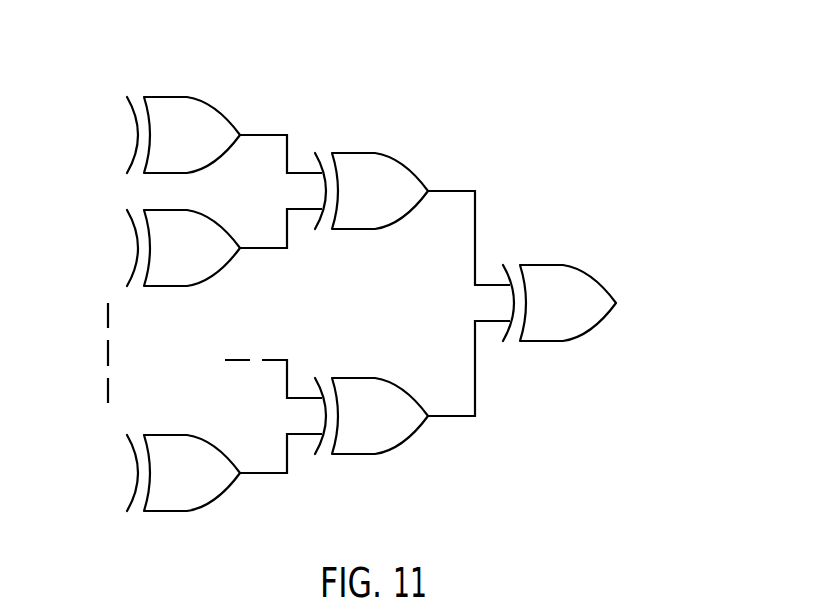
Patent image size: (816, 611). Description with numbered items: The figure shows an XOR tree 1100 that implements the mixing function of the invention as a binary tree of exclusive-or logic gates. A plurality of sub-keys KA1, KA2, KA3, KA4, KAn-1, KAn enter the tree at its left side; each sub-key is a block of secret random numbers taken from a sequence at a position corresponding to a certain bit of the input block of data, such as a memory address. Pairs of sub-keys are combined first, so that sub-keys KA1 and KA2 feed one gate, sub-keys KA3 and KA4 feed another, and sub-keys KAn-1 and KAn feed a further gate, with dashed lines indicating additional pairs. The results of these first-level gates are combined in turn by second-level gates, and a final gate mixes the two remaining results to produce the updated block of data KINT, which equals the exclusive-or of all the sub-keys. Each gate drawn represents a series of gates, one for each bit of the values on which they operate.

The XOR tree 1100 is at (372, 266).
The sub-key KA1 is at (134, 117).
The sub-key KA2 is at (134, 153).
The sub-key KA3 is at (134, 230).
The sub-key KA4 is at (134, 266).
The sub-key KAn-1 is at (134, 455).
The sub-key KAn is at (134, 491).
The updated block of data KINT is at (616, 303).